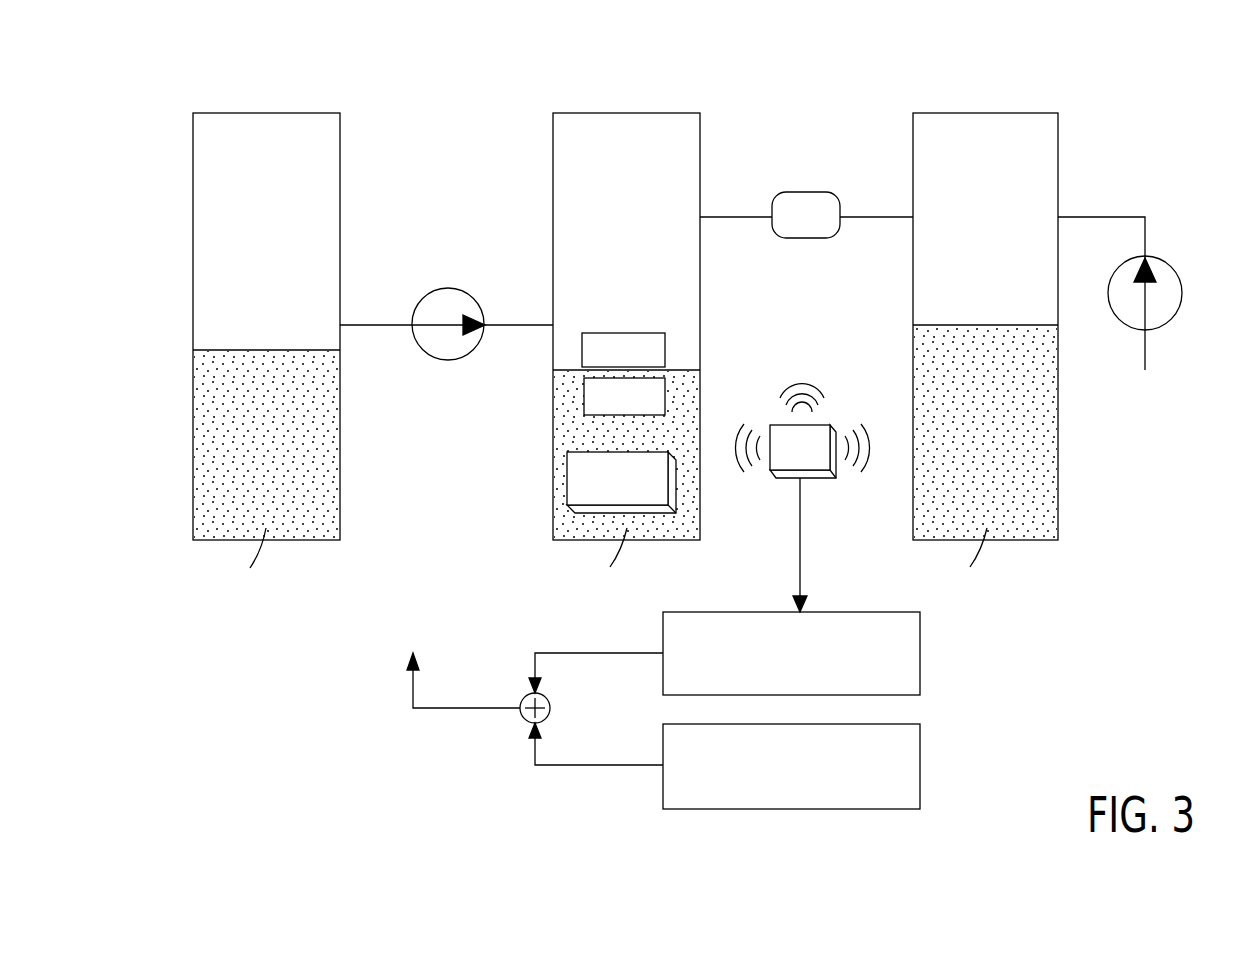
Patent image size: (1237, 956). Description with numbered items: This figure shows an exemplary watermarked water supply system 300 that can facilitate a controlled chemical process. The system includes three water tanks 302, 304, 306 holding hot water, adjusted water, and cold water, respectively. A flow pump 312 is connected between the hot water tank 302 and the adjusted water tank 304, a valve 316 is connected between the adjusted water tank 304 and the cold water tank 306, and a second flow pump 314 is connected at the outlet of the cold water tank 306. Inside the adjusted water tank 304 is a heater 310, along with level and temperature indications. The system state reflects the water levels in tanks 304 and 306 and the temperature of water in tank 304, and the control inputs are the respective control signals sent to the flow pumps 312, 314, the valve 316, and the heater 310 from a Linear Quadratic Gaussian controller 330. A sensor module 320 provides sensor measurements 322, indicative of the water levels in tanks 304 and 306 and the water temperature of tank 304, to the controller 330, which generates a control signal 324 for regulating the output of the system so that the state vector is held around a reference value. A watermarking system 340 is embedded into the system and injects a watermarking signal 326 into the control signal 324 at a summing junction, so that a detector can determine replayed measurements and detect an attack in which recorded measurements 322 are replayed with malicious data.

The watermarked water supply system 300 is at (888, 70).
The water tank 302 is at (340, 152).
The water tank 304 is at (700, 152).
The water tank 306 is at (1058, 152).
The heater 310 is at (565, 478).
The flow pump 312 is at (448, 360).
The flow pump 314 is at (1162, 325).
The valve 316 is at (806, 190).
The sensor module 320 is at (766, 462).
The sensor measurements 322 is at (803, 535).
The control signal 324 is at (532, 662).
The watermarking signal 326 is at (530, 755).
The Linear Quadratic Gaussian controller 330 is at (920, 652).
The watermarking system 340 is at (920, 765).